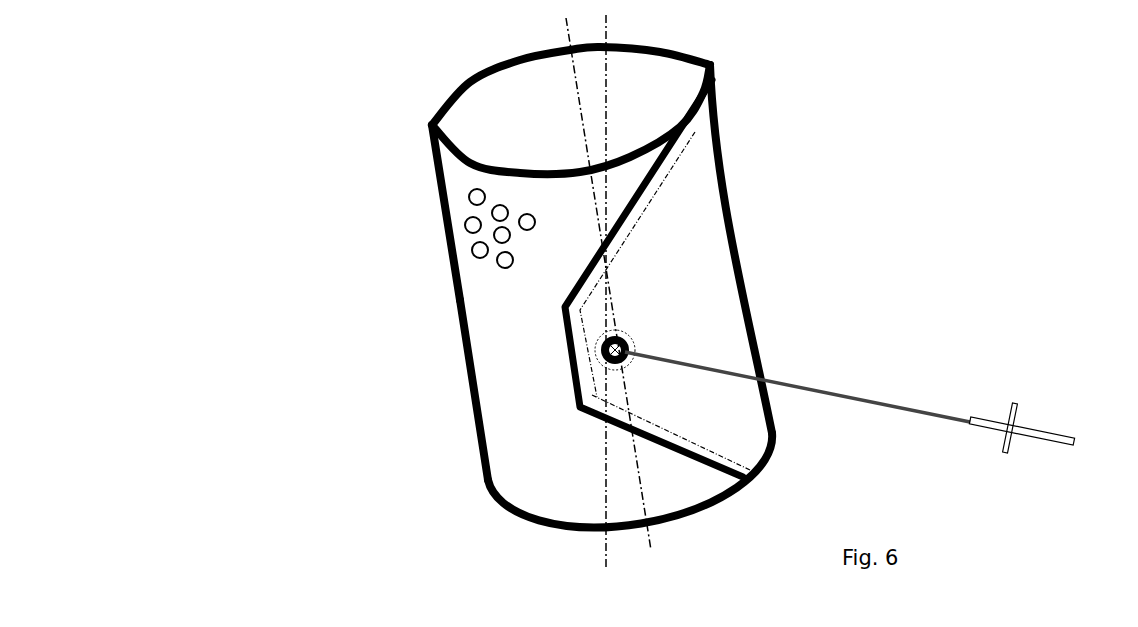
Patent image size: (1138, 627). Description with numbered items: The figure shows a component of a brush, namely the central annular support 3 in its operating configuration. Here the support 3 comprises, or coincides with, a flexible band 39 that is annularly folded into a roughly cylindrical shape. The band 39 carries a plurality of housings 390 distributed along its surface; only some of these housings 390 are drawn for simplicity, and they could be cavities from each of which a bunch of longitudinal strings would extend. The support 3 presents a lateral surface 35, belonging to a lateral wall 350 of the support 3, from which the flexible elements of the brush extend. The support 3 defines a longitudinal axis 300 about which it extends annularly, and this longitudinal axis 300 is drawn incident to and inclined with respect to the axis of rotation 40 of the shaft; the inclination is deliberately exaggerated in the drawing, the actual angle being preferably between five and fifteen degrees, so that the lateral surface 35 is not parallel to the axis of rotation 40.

The central annular support 3 is at (658, 263).
The lateral surface 35 is at (431, 229).
The flexible band 39 is at (773, 228).
The axis of rotation 40 is at (625, 110).
The longitudinal axis 300 is at (562, 106).
The lateral wall 350 is at (440, 289).
The housings 390 is at (452, 181).